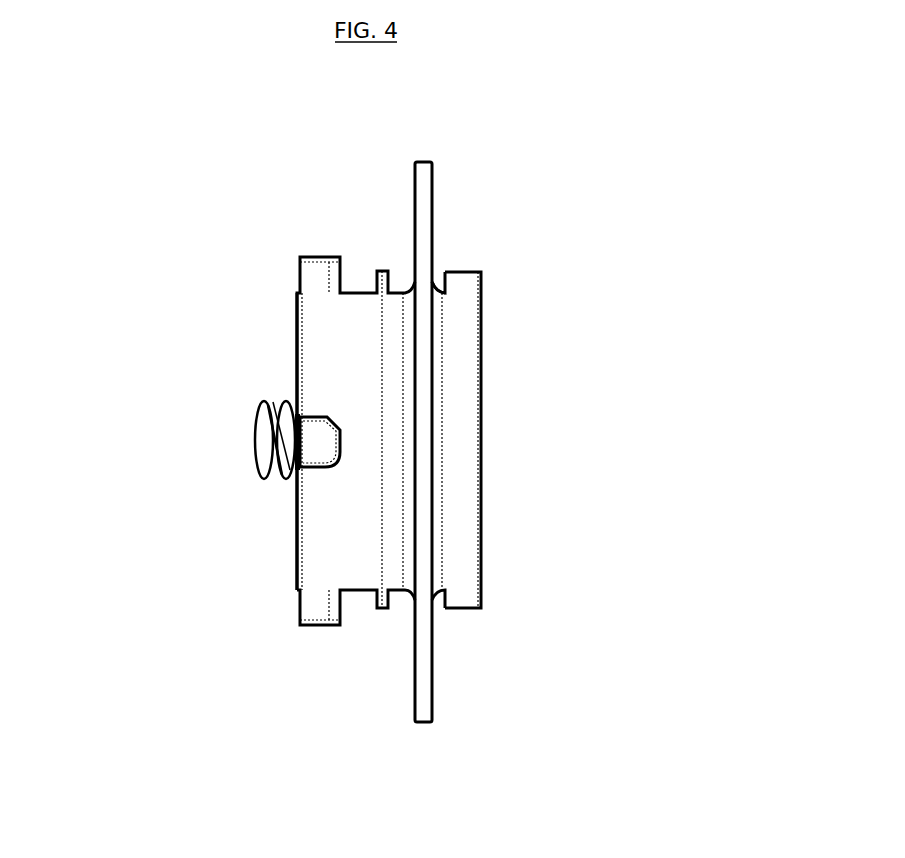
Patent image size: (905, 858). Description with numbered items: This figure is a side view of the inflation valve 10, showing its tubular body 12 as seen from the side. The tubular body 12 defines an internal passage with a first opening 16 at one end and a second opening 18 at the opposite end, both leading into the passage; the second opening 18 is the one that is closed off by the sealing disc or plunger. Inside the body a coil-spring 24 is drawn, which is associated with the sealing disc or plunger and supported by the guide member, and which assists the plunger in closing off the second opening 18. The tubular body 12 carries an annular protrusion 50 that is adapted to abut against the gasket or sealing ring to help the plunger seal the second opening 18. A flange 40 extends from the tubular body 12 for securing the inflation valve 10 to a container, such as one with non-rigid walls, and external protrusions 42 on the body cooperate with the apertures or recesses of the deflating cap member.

The inflation valve 10 is at (58, 107).
The tubular body 12 is at (363, 312).
The first opening 16 is at (287, 360).
The second opening 18 is at (445, 436).
The coil-spring 24 is at (300, 472).
The flange 40 is at (425, 690).
The external protrusions 42 is at (312, 610).
The annular protrusion 50 is at (433, 293).